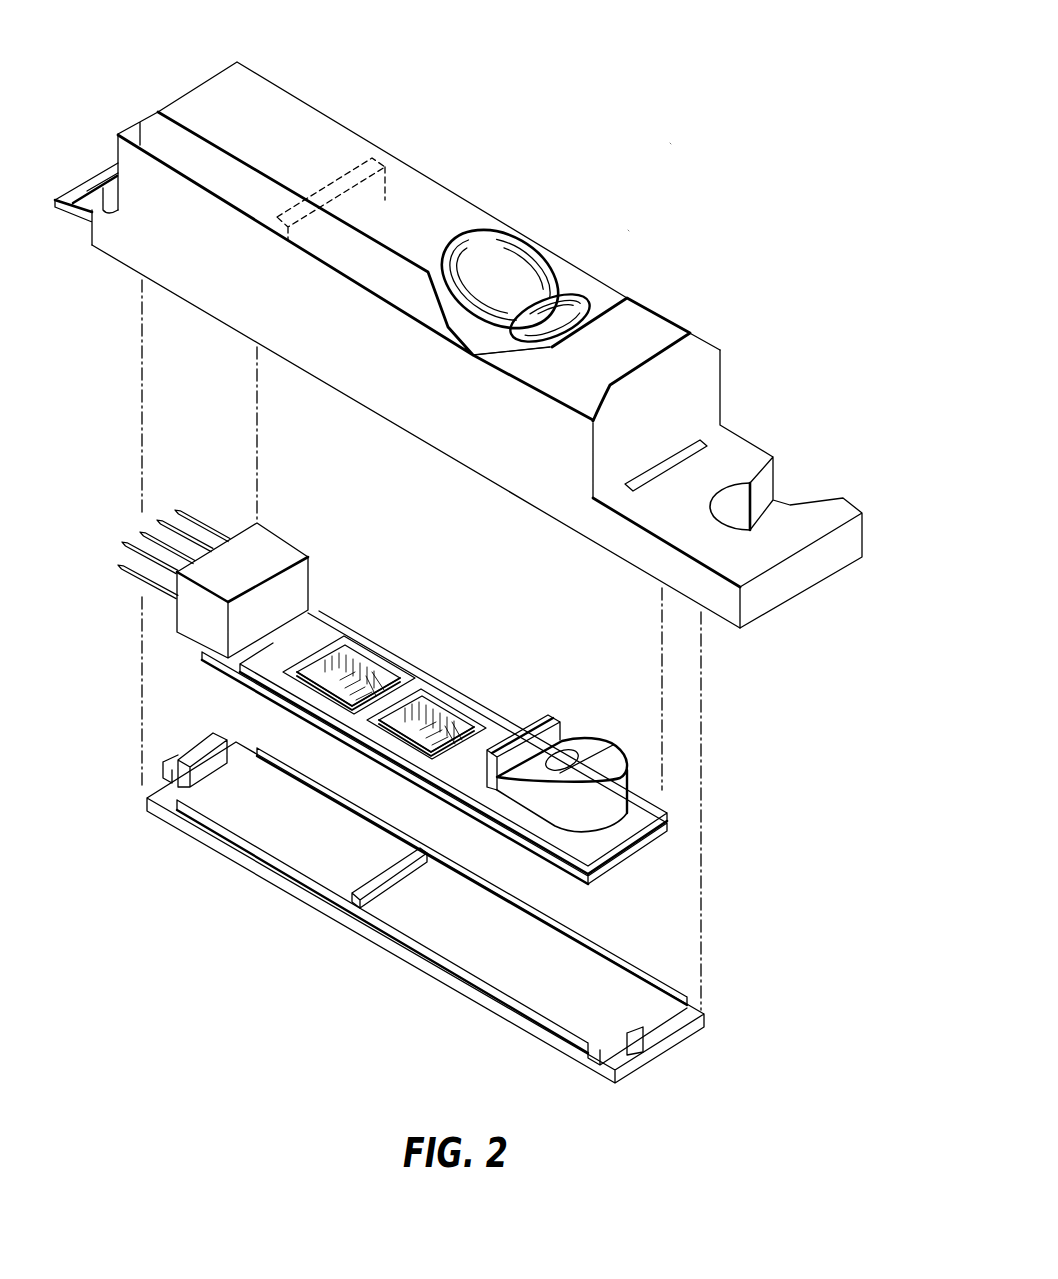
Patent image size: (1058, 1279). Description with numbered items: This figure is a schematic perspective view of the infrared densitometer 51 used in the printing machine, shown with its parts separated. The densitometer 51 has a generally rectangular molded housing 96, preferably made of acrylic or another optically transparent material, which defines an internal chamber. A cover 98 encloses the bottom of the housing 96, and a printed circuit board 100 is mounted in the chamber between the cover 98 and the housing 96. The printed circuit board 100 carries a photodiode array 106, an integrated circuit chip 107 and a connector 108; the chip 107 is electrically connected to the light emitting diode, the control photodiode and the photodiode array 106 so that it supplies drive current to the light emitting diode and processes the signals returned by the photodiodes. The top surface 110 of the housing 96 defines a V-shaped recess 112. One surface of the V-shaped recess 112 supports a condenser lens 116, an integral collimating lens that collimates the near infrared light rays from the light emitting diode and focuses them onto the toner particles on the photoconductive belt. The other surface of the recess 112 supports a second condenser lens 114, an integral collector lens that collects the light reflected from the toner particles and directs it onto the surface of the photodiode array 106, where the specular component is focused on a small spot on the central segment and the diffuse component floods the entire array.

The infrared densitometer 51 is at (670, 143).
The housing 96 is at (365, 138).
The cover 98 is at (637, 970).
The printed circuit board 100 is at (647, 823).
The photodiode array 106 is at (447, 735).
The integrated circuit chip 107 is at (363, 665).
The connector 108 is at (270, 550).
The top surface 110 is at (447, 205).
The V-shaped recess 112 is at (628, 230).
The condenser lens 114 is at (515, 257).
The condenser lens 116 is at (590, 277).